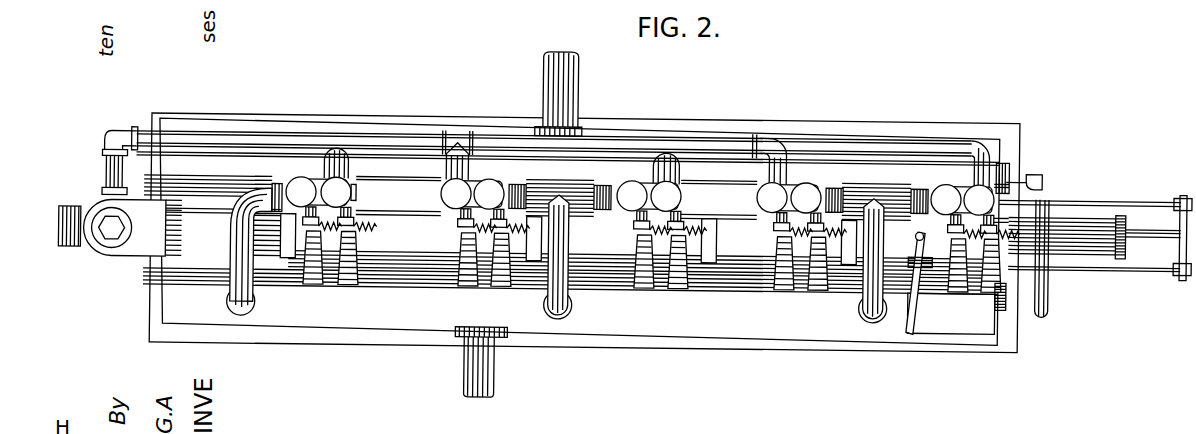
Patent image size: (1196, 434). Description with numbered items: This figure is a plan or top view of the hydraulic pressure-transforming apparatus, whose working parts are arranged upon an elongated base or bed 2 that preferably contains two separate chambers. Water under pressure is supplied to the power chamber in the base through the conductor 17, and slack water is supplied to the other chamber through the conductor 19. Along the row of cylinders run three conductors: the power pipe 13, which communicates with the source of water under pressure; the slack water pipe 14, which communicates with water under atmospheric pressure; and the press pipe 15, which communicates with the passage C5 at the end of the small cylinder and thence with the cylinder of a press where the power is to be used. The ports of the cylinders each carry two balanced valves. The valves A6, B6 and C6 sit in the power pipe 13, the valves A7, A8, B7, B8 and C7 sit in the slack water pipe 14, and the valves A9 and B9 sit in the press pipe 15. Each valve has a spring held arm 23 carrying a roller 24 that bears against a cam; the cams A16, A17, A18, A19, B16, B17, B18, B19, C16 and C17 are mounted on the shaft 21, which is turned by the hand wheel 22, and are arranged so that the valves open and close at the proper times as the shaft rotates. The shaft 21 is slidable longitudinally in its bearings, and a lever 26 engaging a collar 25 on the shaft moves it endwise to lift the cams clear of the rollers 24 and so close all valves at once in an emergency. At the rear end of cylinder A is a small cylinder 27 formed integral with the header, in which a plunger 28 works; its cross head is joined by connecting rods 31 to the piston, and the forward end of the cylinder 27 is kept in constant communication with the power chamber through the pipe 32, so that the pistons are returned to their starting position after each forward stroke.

The base or bed 2 is at (718, 313).
The power pipe 13 is at (347, 147).
The slack water pipe 14 is at (233, 277).
The press pipe 15 is at (282, 135).
The conductor 17 is at (574, 73).
The conductor 19 is at (498, 373).
The shaft 21 is at (425, 259).
The hand wheel 22 is at (1052, 287).
The spring held arm 23 is at (355, 221).
The roller 24 is at (646, 235).
The collar 25 is at (928, 312).
The lever 26 is at (905, 324).
The cylinder 27 is at (1090, 206).
The plunger 28 is at (1140, 220).
The connecting rods 31 is at (1130, 191).
The pipe 32 is at (1043, 171).
The passage C5 is at (72, 207).
The valve C7 is at (302, 186).
The valve C6 is at (352, 193).
The cam C17 is at (309, 280).
The cam C16 is at (352, 278).
The valve B9 is at (457, 191).
The valve B8 is at (490, 191).
The valve B7 is at (633, 187).
The valve B6 is at (680, 187).
The cam B19 is at (470, 278).
The cam B18 is at (503, 278).
The cam B17 is at (639, 283).
The cam B16 is at (681, 280).
The valve A9 is at (773, 193).
The valve A8 is at (807, 192).
The valve A7 is at (947, 190).
The valve A6 is at (982, 195).
The cam A19 is at (788, 282).
The cam A18 is at (821, 282).
The cam A17 is at (960, 283).
The cam A16 is at (1002, 289).